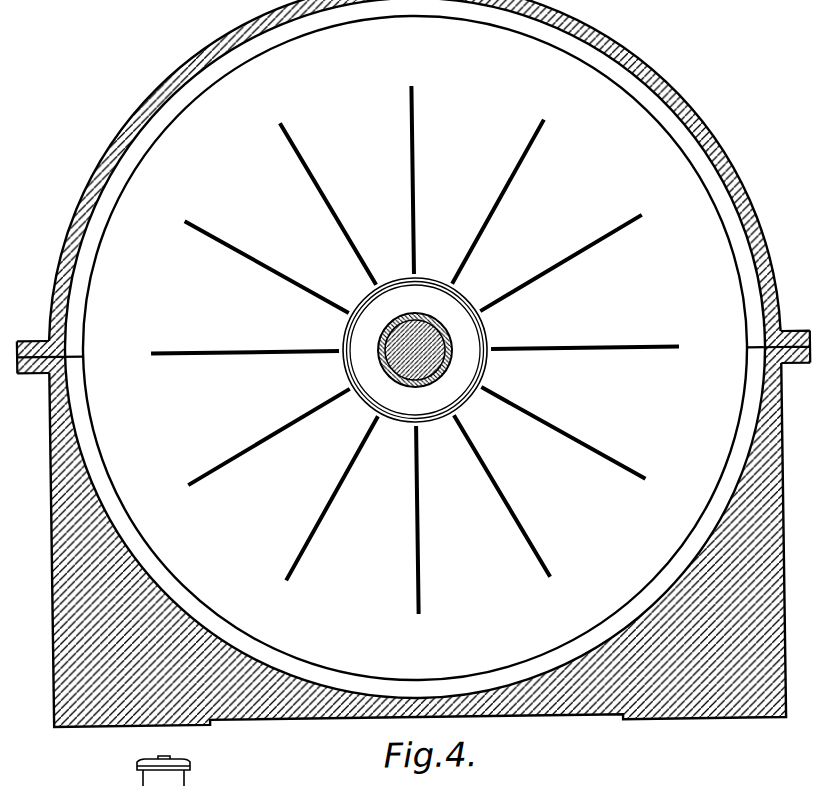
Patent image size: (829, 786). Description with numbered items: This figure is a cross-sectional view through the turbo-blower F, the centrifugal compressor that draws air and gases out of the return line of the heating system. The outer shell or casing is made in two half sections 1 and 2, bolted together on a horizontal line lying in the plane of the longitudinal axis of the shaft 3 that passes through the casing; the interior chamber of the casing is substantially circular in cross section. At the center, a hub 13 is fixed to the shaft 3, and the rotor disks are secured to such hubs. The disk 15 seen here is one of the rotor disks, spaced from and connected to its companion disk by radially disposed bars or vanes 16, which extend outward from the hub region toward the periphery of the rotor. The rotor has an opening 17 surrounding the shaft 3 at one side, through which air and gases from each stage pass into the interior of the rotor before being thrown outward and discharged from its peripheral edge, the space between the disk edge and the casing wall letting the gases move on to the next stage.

The turbo-blower F is at (412, 239).
The casing half section 1 is at (713, 137).
The casing half section 2 is at (49, 557).
The shaft 3 is at (428, 320).
The hub 13 is at (404, 383).
The disk 15 is at (414, 347).
The radially disposed bars or vanes 16 is at (634, 350).
The opening 17 is at (443, 371).